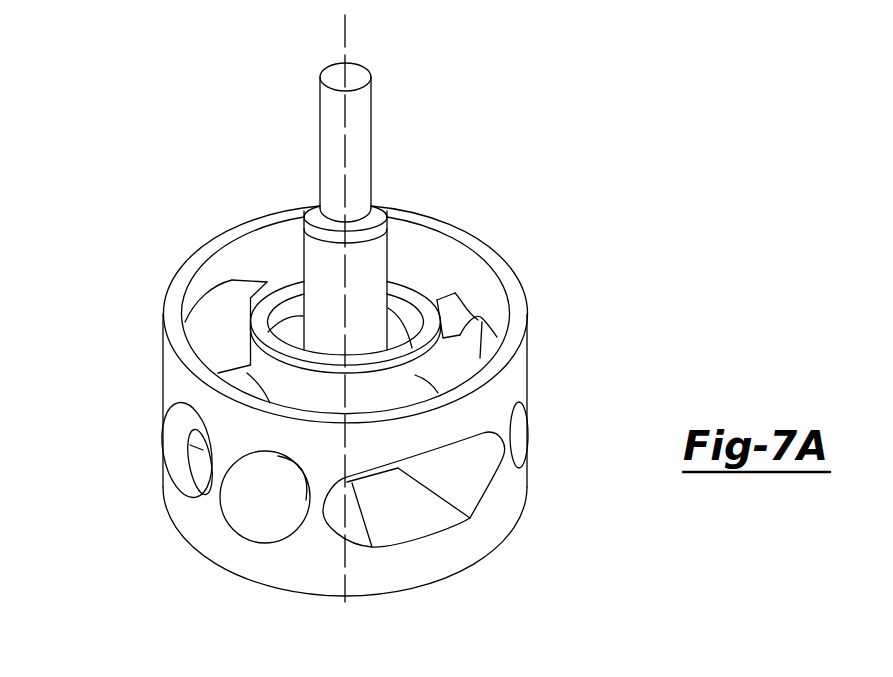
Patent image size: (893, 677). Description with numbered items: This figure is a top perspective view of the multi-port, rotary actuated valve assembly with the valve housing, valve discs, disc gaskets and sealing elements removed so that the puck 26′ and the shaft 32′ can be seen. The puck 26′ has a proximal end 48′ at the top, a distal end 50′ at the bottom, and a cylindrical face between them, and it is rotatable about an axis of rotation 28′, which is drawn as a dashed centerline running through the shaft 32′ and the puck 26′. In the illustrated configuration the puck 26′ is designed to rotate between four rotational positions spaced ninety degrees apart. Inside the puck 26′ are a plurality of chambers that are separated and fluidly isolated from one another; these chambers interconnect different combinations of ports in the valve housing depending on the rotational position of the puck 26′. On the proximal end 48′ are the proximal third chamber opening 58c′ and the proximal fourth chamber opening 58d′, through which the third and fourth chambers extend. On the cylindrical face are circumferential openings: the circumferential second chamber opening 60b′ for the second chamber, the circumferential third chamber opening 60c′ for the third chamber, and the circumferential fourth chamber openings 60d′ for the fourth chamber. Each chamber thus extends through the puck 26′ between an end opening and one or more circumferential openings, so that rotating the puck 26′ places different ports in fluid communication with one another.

The puck 26′ is at (166, 279).
The axis of rotation 28′ is at (345, 37).
The shaft 32′ is at (365, 138).
The proximal end 48′ is at (283, 208).
The distal end 50′ is at (372, 597).
The proximal third chamber opening 58c′ is at (393, 321).
The proximal fourth chamber opening 58d′ is at (268, 254).
The circumferential second chamber opening 60b′ is at (187, 466).
The circumferential third chamber opening 60c′ is at (400, 520).
The circumferential fourth chamber opening 60d′ is at (250, 510).